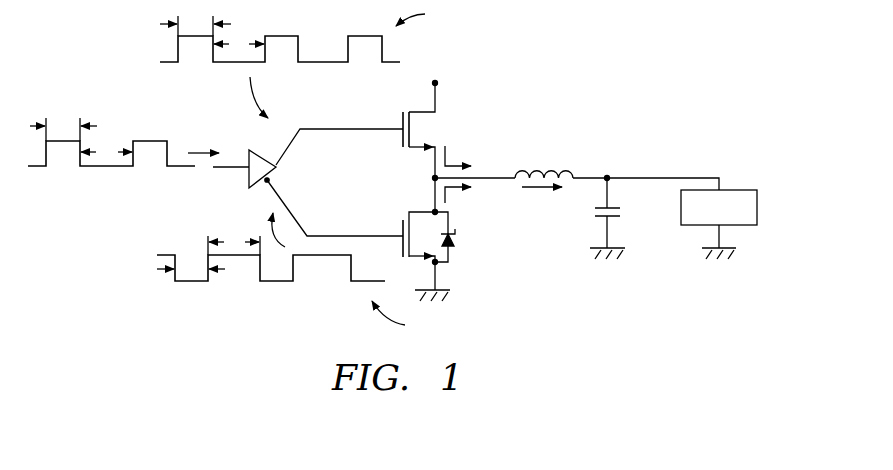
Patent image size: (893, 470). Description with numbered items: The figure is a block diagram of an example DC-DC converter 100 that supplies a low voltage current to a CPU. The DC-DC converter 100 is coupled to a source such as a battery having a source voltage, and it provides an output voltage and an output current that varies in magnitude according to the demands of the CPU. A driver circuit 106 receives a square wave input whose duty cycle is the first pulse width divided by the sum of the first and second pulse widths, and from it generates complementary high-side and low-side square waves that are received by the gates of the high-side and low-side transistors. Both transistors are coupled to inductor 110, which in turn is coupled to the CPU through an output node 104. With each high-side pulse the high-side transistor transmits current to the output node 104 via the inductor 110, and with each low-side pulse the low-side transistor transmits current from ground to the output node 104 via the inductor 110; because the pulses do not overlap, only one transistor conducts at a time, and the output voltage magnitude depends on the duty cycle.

The DC-DC converter 100 is at (786, 44).
The driver circuit 106 is at (243, 177).
The inductor 110 is at (543, 168).
The output node 104 is at (609, 176).